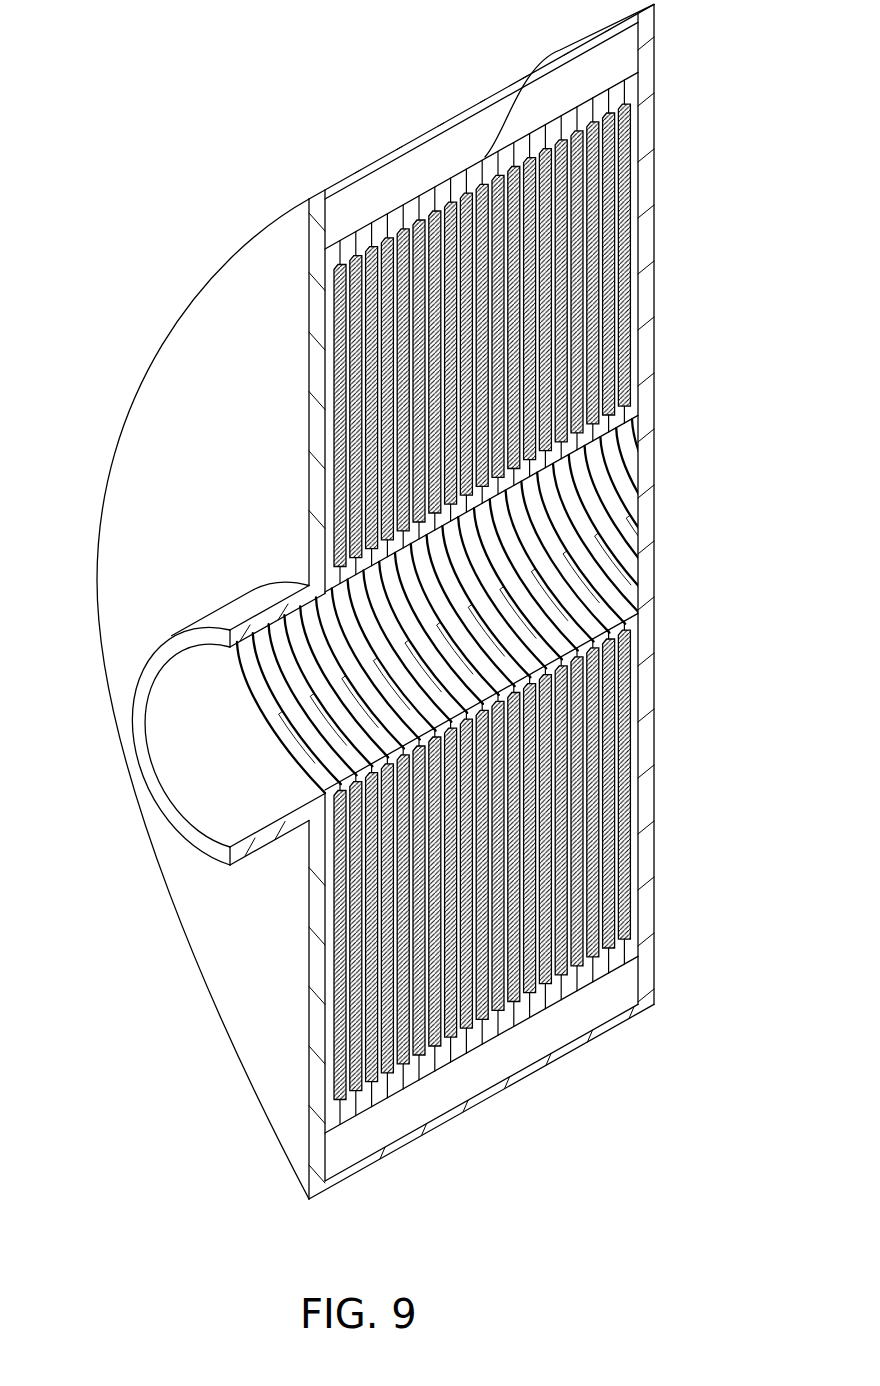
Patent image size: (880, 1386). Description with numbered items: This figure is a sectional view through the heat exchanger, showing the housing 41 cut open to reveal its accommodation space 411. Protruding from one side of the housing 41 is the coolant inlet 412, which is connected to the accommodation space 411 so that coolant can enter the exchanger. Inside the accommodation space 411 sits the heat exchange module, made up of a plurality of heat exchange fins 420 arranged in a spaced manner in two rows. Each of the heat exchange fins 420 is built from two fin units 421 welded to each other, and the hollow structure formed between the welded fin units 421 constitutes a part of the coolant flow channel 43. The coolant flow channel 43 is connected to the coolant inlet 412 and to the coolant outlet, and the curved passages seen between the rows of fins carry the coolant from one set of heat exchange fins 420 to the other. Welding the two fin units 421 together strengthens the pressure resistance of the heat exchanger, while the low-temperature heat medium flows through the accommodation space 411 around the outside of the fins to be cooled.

The housing 41 is at (350, 186).
The accommodation space 411 is at (458, 152).
The coolant inlet 412 is at (195, 773).
The heat exchange fins 420 is at (509, 1042).
The fin units 421 is at (410, 1075).
The coolant flow channel 43 is at (530, 475).